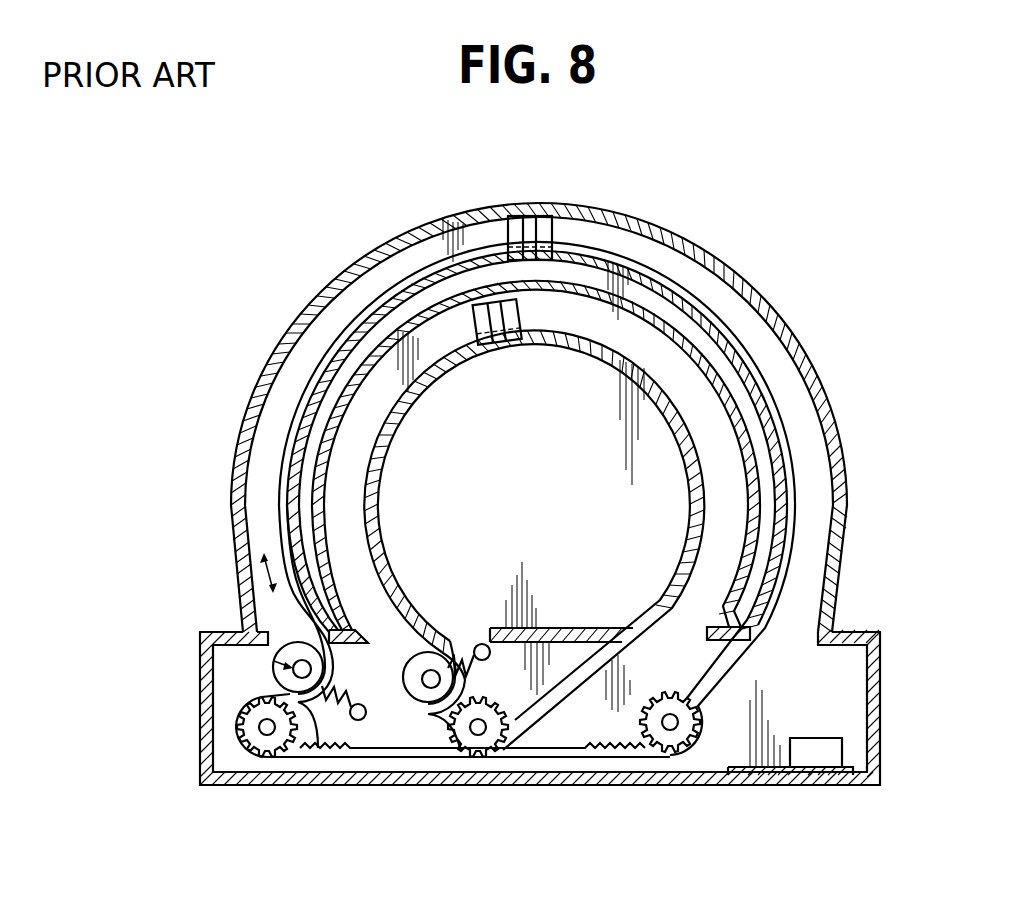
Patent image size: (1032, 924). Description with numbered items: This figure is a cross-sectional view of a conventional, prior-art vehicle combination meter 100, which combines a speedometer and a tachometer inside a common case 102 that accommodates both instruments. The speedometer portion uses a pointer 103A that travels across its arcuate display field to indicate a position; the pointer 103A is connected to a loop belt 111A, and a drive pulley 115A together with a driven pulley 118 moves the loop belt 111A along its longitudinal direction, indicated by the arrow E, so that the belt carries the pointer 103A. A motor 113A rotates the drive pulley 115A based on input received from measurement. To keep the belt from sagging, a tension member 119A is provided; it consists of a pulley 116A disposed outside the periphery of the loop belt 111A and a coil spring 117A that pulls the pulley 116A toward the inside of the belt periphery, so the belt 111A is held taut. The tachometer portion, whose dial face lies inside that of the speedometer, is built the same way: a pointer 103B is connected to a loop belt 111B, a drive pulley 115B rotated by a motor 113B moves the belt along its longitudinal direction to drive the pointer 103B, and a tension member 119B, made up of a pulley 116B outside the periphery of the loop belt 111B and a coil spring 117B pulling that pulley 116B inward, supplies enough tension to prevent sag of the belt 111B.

The vehicle combination meter 100 is at (330, 237).
The case 102 is at (436, 210).
The pointer 103A is at (514, 214).
The pointer 103B is at (479, 321).
The loop belt 111A is at (587, 257).
The loop belt 111B is at (549, 340).
The motor 113A is at (292, 722).
The motor 113B is at (507, 748).
The drive pulley 115A is at (247, 750).
The drive pulley 115B is at (500, 758).
The pulley 116A is at (296, 693).
The pulley 116B is at (420, 702).
The coil spring 117A is at (334, 718).
The coil spring 117B is at (448, 673).
The driven pulley 118 is at (676, 756).
The tension member 119A is at (370, 882).
The tension member 119B is at (510, 882).